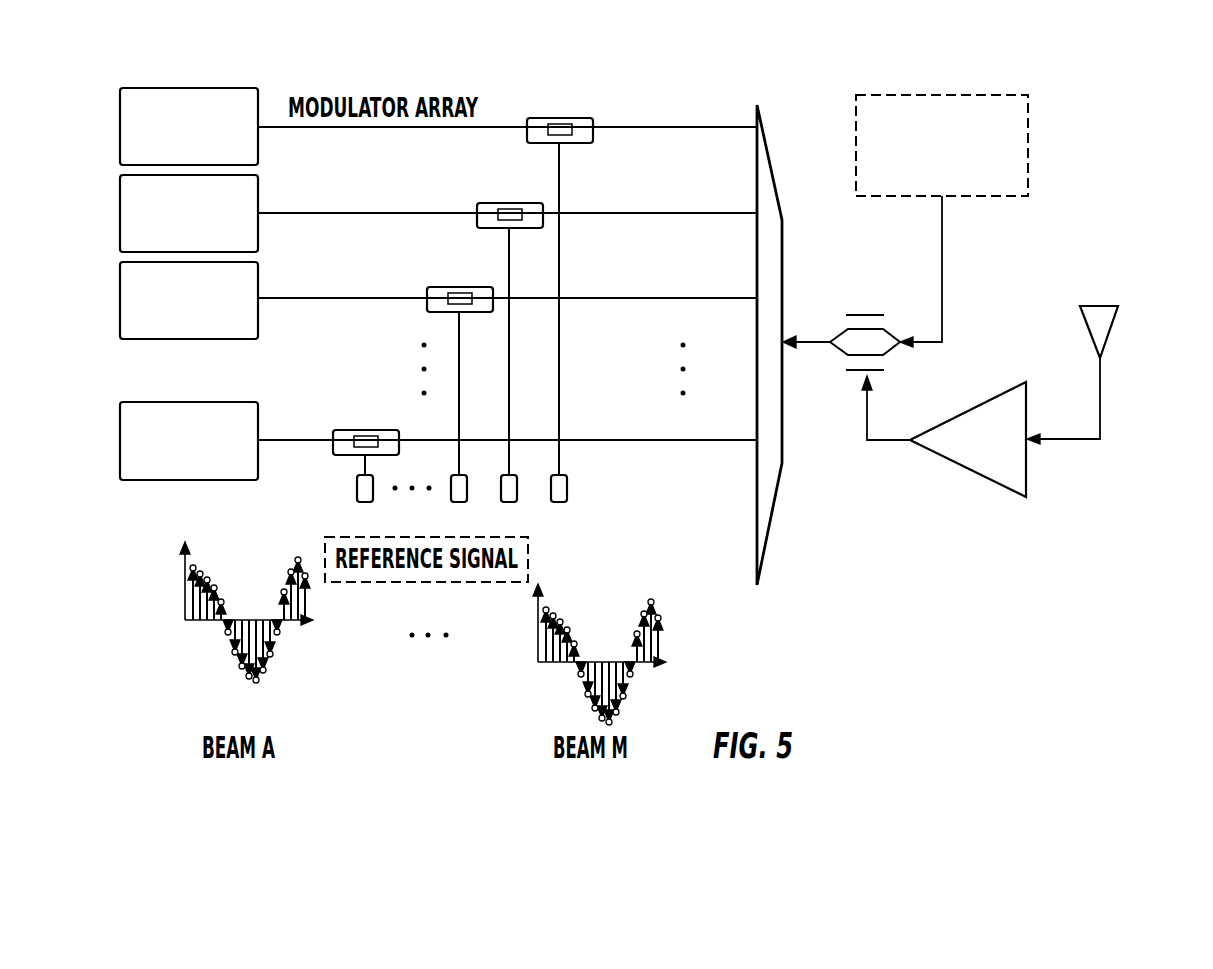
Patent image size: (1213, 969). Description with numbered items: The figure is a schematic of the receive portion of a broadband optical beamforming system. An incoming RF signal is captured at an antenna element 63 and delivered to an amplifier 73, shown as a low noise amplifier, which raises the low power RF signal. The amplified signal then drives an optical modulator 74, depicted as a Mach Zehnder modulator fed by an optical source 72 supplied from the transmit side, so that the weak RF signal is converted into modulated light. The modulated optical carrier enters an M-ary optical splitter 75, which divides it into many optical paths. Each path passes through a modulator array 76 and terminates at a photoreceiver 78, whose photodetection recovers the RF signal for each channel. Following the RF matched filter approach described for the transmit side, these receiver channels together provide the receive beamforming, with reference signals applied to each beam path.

The photo receivers 78 is at (213, 88).
The modulator array 76 is at (627, 358).
The M-ary optical splitter 75 is at (784, 465).
The optical modulator 74 is at (888, 357).
The optical source (from transmit) 72 is at (1000, 95).
The amplifier 73 is at (1027, 473).
The antenna 63 is at (1105, 304).